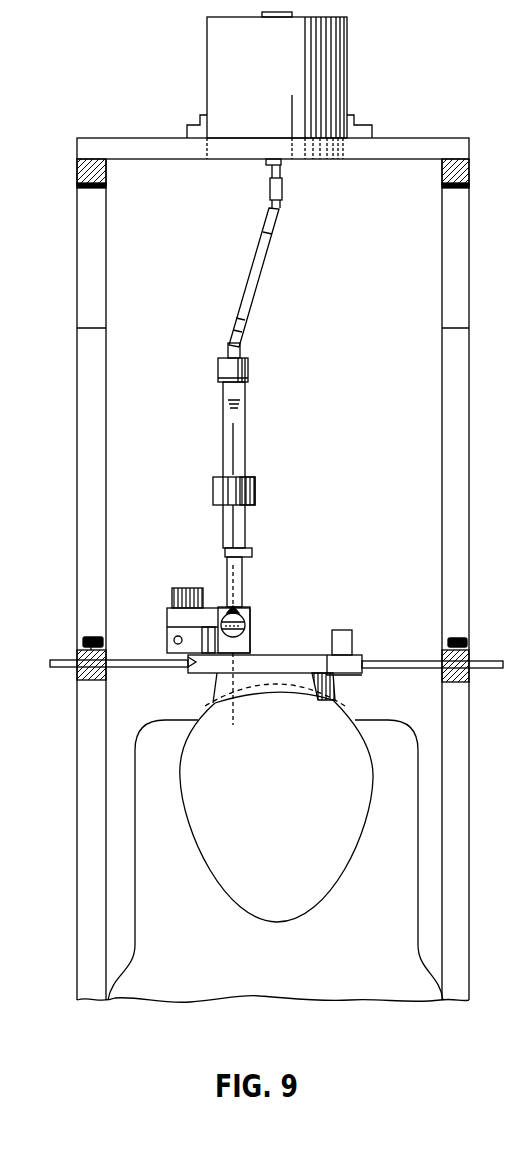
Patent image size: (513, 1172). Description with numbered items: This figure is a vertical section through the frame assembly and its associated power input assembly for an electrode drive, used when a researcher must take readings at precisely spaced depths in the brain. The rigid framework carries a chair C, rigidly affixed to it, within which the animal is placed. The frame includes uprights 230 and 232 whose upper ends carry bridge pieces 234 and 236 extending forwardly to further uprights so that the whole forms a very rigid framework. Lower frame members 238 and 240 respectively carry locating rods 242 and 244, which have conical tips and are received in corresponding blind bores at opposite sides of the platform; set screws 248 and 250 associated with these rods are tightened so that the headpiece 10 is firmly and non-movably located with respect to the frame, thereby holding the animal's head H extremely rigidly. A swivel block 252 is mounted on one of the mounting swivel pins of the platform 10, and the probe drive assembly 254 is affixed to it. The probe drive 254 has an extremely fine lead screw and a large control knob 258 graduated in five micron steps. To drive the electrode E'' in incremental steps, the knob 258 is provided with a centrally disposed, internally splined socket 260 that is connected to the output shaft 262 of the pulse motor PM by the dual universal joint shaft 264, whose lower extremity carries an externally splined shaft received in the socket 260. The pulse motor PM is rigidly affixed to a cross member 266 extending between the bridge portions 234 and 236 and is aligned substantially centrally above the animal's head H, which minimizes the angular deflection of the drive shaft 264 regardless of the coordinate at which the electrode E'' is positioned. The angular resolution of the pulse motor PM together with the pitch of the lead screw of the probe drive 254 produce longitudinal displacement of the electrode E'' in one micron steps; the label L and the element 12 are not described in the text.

The pulse motor PM is at (327, 70).
The cross member 266 is at (393, 145).
The upright 230 is at (95, 495).
The upright 232 is at (462, 493).
The lamp / enclosure L is at (473, 538).
The bridge piece 234 is at (108, 170).
The bridge piece 236 is at (440, 170).
The lower frame member 238 is at (108, 675).
The lower frame member 240 is at (470, 662).
The locating rod 242 is at (137, 659).
The locating rod 244 is at (413, 659).
The set screw 248 is at (92, 637).
The set screw 250 is at (458, 642).
The output shaft 262 is at (288, 180).
The dual universal joint shaft 264 is at (266, 275).
The internally splined socket 260 is at (240, 352).
The control knob 258 is at (250, 370).
The probe drive assembly 254 is at (251, 522).
The electrode E'' is at (260, 485).
The swivel block 252 is at (254, 638).
The headpiece 10 is at (357, 650).
The bulb neck 12 is at (343, 682).
The animal's head H is at (196, 785).
The chair C is at (398, 815).